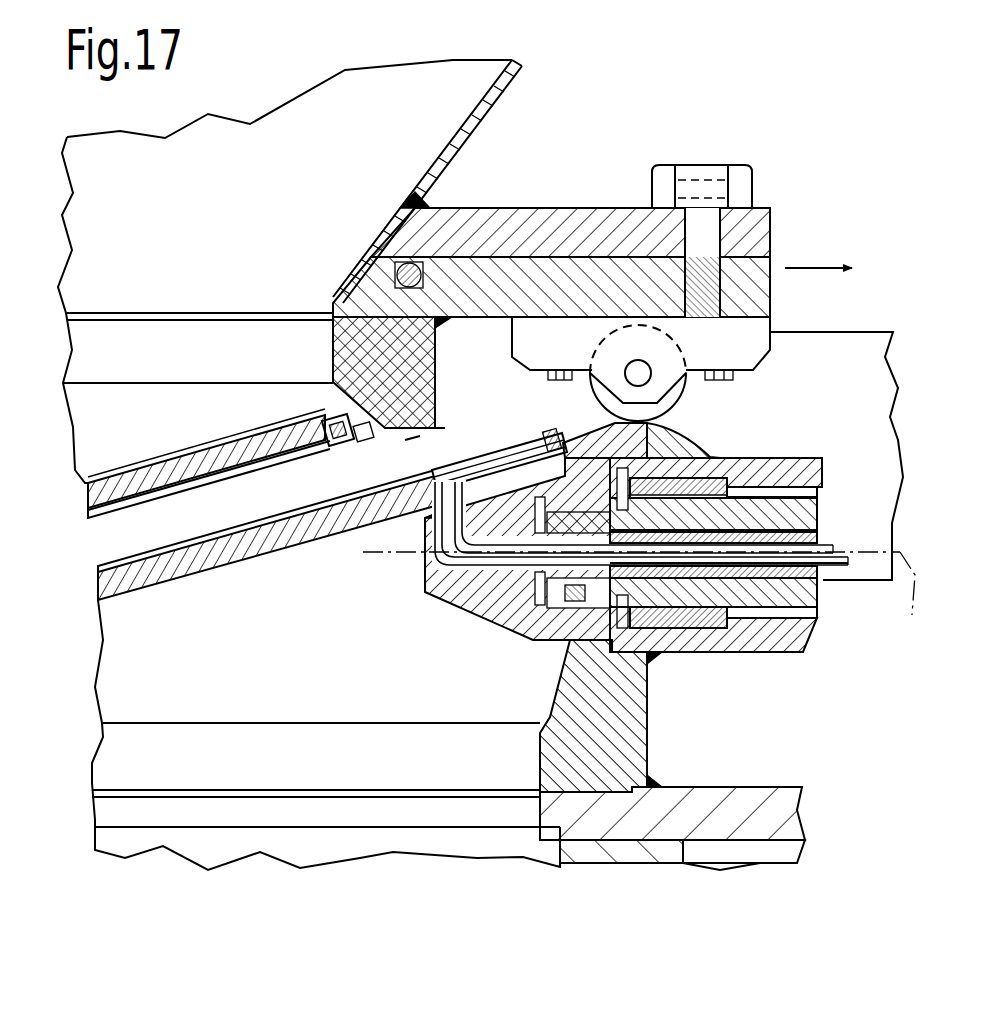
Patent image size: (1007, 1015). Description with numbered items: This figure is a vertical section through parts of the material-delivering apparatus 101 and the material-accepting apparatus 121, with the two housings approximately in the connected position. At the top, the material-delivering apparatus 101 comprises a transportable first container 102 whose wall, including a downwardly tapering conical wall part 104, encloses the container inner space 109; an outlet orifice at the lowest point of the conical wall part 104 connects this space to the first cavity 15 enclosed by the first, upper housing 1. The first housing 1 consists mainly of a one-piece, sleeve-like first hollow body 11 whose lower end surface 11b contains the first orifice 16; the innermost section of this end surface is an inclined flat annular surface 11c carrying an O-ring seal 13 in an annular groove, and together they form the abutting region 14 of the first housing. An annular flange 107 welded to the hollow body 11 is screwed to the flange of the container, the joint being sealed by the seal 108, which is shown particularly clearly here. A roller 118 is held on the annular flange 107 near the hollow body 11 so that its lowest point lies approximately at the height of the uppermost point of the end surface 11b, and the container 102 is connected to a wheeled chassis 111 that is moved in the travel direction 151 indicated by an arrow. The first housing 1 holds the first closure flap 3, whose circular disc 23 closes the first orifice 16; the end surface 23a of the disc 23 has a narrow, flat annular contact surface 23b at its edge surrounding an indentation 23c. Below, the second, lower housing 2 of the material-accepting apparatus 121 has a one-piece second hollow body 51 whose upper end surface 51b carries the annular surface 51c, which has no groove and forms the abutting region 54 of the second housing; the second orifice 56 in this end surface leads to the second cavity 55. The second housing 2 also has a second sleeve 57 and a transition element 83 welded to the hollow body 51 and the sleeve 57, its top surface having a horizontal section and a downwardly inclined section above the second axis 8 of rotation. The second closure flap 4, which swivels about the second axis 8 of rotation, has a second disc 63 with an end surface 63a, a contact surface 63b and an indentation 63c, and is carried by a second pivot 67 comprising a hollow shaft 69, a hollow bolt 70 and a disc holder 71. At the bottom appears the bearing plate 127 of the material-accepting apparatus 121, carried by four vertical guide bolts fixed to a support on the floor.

The first housing 1 is at (437, 383).
The second housing 2 is at (650, 705).
The first closure flap 3 is at (88, 505).
The second closure flap 4 is at (98, 597).
The second axis of rotation 8 is at (902, 590).
The first hollow body 11 is at (438, 352).
The end surface 11b is at (433, 438).
The annular surface 11c is at (355, 432).
The seal 13 is at (350, 418).
The abutting region 14 is at (387, 410).
The first cavity 15 is at (125, 337).
The first orifice 16 is at (366, 448).
The disc 23 is at (210, 483).
The end surface 23a is at (215, 487).
The contact surface 23b is at (308, 463).
The indentation 23c is at (130, 512).
The second hollow body 51 is at (642, 740).
The upper end surface 51b is at (640, 416).
The annular surface 51c is at (600, 422).
The abutting region 54 is at (548, 442).
The second cavity 55 is at (173, 712).
The second orifice 56 is at (560, 432).
The second sleeve 57 is at (735, 536).
The second disc 63 is at (240, 554).
The end surface 63a is at (316, 503).
The contact surface 63b is at (525, 447).
The indentation 63c is at (130, 556).
The second pivot 67 is at (827, 597).
The hollow rod or hollow shaft 69 is at (818, 510).
The hollow bolt 70 is at (820, 535).
The disc holder 71 is at (457, 605).
The transition element 83 is at (670, 450).
The material-delivering apparatus 101 is at (462, 167).
The first container 102 is at (454, 181).
The conical wall part 104 is at (468, 130).
The annular flange 107 is at (584, 243).
The seal 108 is at (417, 253).
The container inner space 109 is at (362, 113).
The chassis 111 is at (853, 332).
The roller 118 is at (690, 390).
The material-accepting apparatus 121 is at (718, 783).
The bearing plate 127 is at (787, 793).
The travel direction 151 is at (800, 267).